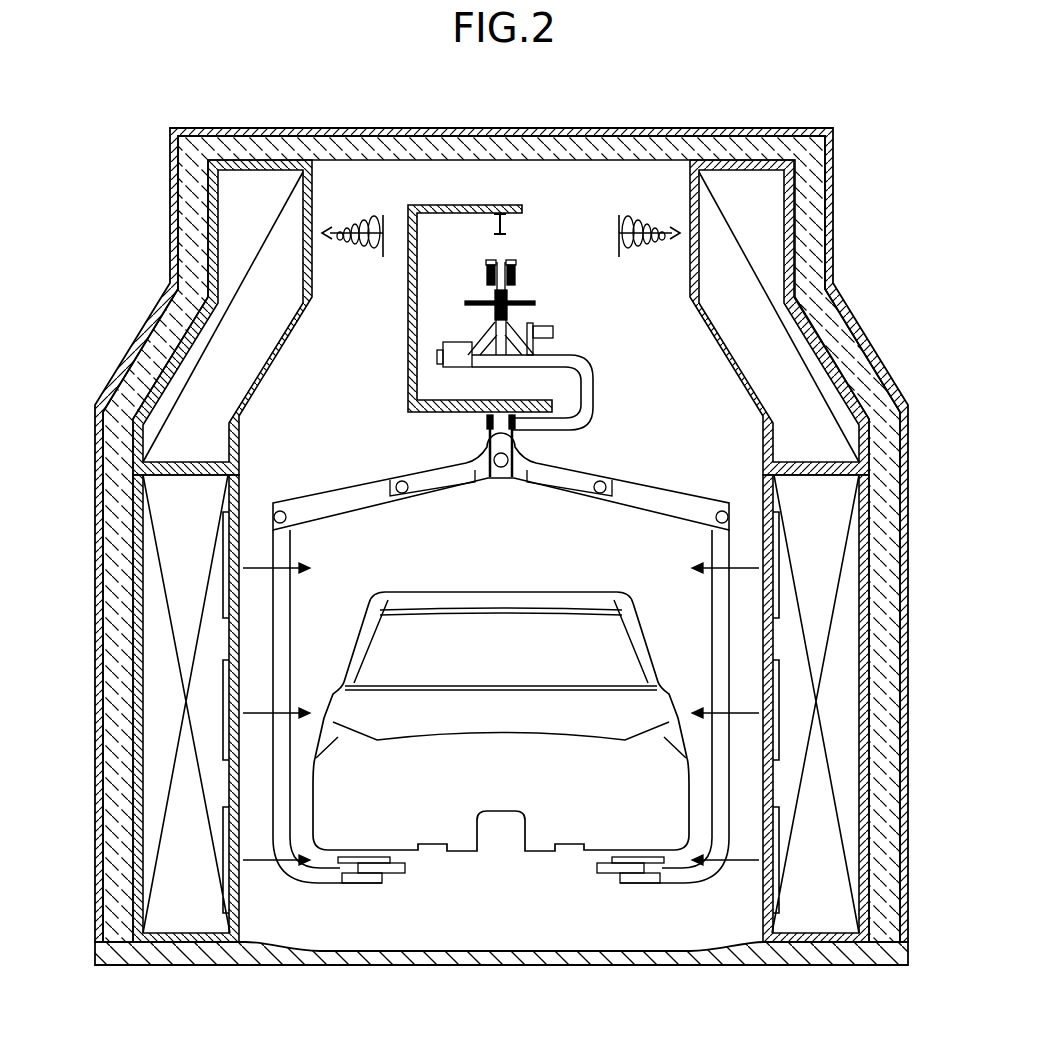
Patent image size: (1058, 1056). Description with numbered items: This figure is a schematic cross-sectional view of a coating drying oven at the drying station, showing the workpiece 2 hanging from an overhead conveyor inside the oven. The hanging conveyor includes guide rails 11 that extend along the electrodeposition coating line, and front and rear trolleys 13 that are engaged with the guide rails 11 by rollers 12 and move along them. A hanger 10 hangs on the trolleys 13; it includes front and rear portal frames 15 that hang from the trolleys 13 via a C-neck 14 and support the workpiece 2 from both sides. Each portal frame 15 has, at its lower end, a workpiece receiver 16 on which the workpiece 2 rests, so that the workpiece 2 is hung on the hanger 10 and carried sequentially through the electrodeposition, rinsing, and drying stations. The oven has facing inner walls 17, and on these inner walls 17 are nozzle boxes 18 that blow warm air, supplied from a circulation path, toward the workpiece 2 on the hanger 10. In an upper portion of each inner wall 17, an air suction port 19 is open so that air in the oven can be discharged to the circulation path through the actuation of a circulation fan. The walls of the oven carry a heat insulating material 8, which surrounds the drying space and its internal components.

The workpiece 2 is at (507, 591).
The heat insulating material 8 is at (528, 148).
The hanger 10 is at (684, 492).
The guide rails 11 is at (488, 263).
The rollers 12 is at (486, 278).
The trolleys 13 is at (509, 309).
The C-neck 14 is at (588, 359).
The portal frames 15 is at (591, 477).
The workpiece receiver 16 is at (408, 868).
The inner walls 17 is at (281, 356).
The nozzle boxes 18 is at (237, 568).
The air suction port 19 is at (313, 247).